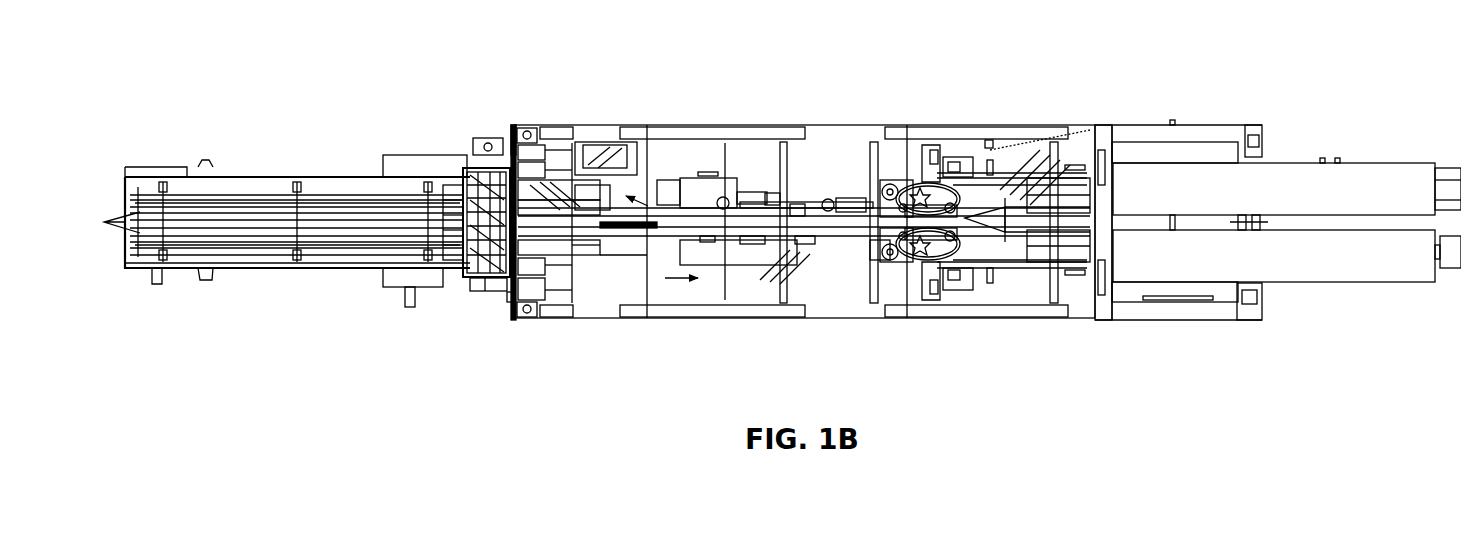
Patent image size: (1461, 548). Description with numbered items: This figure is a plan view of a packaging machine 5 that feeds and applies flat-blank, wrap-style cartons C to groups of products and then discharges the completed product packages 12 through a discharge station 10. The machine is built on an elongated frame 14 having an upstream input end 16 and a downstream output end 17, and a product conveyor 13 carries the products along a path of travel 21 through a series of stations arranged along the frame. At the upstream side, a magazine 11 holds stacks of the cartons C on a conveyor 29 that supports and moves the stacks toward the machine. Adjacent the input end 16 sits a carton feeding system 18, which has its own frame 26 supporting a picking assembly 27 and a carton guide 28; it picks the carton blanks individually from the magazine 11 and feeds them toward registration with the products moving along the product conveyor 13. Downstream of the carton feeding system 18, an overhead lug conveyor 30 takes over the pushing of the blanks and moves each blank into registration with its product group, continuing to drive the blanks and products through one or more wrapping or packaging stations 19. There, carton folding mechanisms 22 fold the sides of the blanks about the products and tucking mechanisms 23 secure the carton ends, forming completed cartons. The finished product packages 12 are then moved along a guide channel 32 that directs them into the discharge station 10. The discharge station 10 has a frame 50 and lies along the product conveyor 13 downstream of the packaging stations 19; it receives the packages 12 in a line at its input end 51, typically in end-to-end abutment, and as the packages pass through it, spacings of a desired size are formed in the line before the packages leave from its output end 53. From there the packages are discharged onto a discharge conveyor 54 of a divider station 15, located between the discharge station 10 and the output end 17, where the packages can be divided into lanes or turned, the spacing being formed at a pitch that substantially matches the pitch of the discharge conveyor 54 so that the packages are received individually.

The packaging machine 5 is at (1040, 48).
The discharge station 10 is at (916, 182).
The magazine 11 is at (298, 175).
The product packages 12 is at (804, 244).
The product conveyor 13 is at (622, 258).
The elongated frame 14 is at (1106, 125).
The divider station 15 is at (1029, 165).
The input end 16 is at (508, 300).
The output end 17 is at (1258, 283).
The carton feeding system 18 is at (517, 127).
The wrapping or packaging station 19 is at (805, 207).
The path of travel 21 is at (672, 282).
The carton folding mechanisms 22 is at (760, 243).
The tucking mechanisms 23 is at (775, 197).
The frame 26 is at (497, 292).
The picking assembly 27 is at (468, 170).
The carton guide 28 is at (597, 205).
The conveyor 29 is at (237, 198).
The overhead lug conveyor 30 is at (752, 197).
The guide channel 32 is at (851, 202).
The frame 50 is at (903, 268).
The input end 51 is at (860, 243).
The output end 53 is at (965, 255).
The discharge conveyor 54 is at (1018, 243).
The cartons C is at (575, 250).